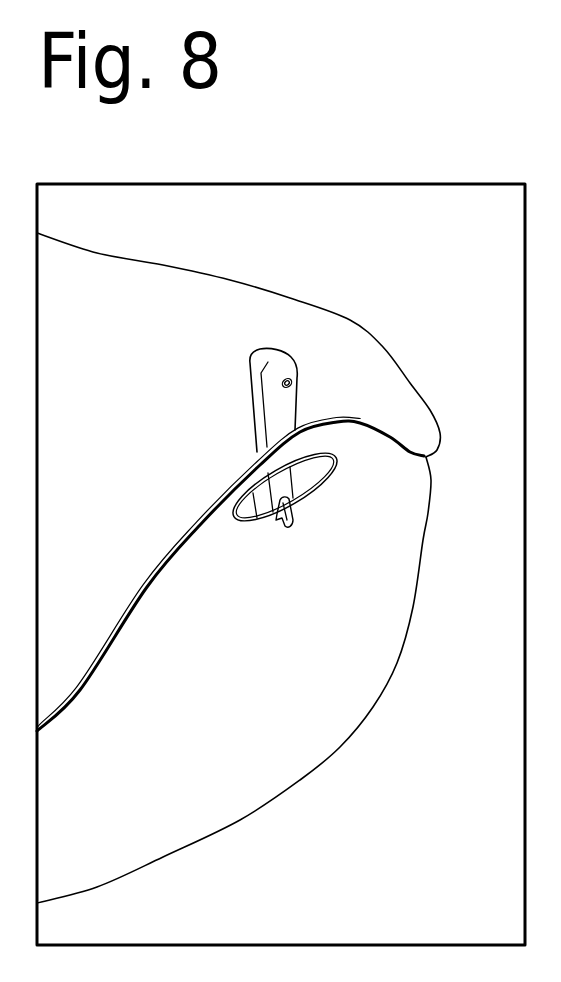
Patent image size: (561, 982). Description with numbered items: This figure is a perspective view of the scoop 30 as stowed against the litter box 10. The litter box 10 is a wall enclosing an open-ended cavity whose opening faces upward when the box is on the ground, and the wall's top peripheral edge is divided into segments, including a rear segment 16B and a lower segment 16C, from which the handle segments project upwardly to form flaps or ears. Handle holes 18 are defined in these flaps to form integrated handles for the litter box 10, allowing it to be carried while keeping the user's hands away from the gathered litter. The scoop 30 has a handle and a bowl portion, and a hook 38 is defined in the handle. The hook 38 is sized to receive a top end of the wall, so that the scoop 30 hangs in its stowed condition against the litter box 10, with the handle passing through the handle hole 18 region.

The litter box 10 is at (315, 278).
The rear segment 16B is at (144, 590).
The lower segment 16C is at (327, 443).
The handle holes 18 is at (242, 526).
The scoop 30 is at (285, 415).
The hook 38 is at (291, 530).